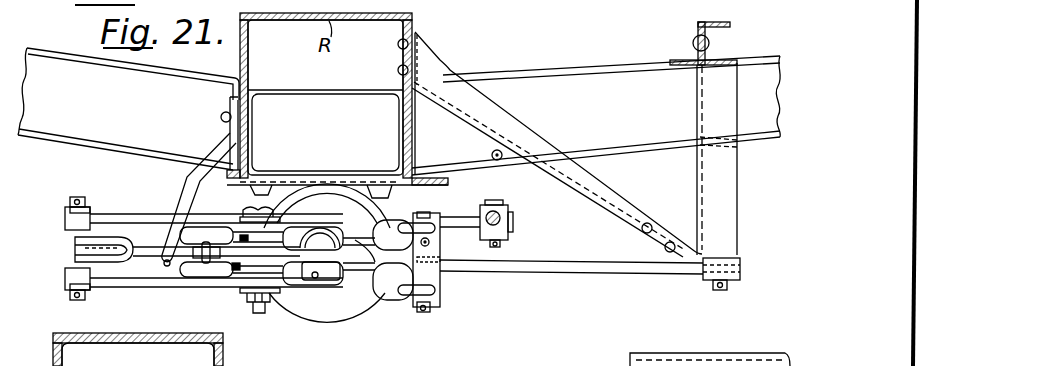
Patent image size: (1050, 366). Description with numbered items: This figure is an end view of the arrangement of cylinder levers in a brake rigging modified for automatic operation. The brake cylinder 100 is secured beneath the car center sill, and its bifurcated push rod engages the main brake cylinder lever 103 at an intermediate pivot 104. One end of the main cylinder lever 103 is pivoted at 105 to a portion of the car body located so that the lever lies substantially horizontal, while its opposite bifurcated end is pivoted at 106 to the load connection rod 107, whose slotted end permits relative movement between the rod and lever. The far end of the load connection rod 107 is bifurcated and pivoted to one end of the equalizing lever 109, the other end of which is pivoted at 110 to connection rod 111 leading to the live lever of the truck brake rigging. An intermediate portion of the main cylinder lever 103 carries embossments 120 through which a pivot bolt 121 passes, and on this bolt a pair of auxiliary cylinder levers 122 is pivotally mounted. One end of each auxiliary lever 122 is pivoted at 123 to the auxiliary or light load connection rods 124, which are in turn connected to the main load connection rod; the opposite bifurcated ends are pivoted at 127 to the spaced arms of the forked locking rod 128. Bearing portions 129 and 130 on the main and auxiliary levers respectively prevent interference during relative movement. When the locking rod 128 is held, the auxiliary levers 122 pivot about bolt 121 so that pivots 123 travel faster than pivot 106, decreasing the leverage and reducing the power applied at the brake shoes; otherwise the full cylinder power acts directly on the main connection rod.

The brake cylinder 100 is at (305, 330).
The main brake cylinder lever 103 is at (573, 265).
The pivotal connection 104 is at (316, 280).
The pivotal connection 105 is at (722, 290).
The pivot 106 is at (85, 248).
The load connection rod 107 is at (115, 252).
The equalizing lever 109 is at (453, 222).
The pivotal connection 110 is at (497, 202).
The connection rod 111 is at (512, 228).
The embossments 120 is at (237, 263).
The pivot bolt 121 is at (255, 314).
The auxiliary cylinder levers 122 is at (125, 220).
The pivotal connection 123 is at (72, 200).
The auxiliary or light load connection rods 124 is at (65, 212).
The pivotal connection 127 is at (422, 215).
The forked locking rod 128 is at (435, 252).
The bearing portion 129 is at (362, 266).
The bearing portions 130 is at (350, 233).